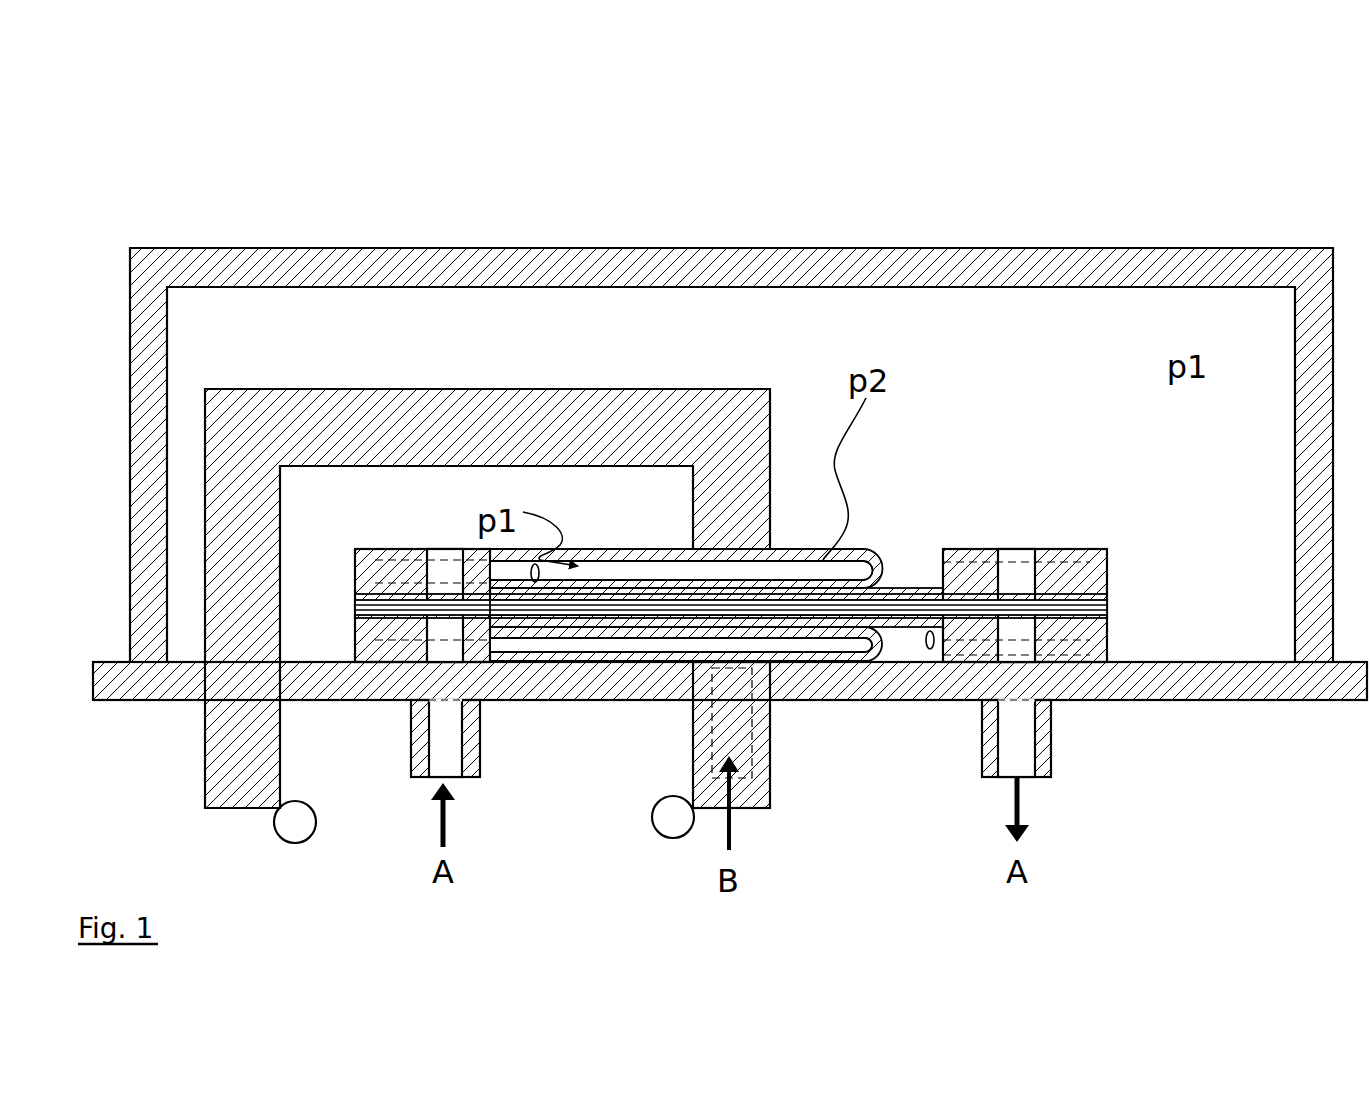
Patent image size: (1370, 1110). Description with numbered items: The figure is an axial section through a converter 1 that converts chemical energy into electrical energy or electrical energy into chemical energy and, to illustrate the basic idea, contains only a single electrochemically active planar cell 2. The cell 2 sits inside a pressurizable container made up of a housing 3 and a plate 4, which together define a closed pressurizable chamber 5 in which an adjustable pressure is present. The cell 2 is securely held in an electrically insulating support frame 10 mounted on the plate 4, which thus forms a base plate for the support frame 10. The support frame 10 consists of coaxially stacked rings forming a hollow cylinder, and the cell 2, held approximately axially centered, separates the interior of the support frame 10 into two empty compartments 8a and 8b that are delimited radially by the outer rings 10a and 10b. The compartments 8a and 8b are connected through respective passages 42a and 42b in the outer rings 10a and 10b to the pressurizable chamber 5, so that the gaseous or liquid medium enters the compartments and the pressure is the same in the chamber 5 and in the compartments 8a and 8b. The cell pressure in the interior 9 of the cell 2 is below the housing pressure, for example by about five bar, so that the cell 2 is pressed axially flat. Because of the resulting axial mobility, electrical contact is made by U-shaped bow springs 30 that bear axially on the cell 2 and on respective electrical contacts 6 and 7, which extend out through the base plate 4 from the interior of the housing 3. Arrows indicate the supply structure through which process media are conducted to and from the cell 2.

The converter 1 is at (236, 155).
The electrochemically active planar cell 2 is at (600, 560).
The housing 3 is at (282, 265).
The plate 4 is at (1245, 675).
The pressurizable chamber 5 is at (353, 363).
The electrical contact 6 is at (252, 780).
The electrical contact 7 is at (713, 787).
The upper compartment 8a is at (790, 560).
The lower compartment 8b is at (907, 630).
The interior of the cell 9 is at (930, 560).
The support frame 10 is at (795, 544).
The outer ring 10a is at (1098, 565).
The outer ring 10b is at (1098, 632).
The springs 30 is at (665, 650).
The first passage 42a is at (410, 555).
The second passage 42b is at (970, 630).